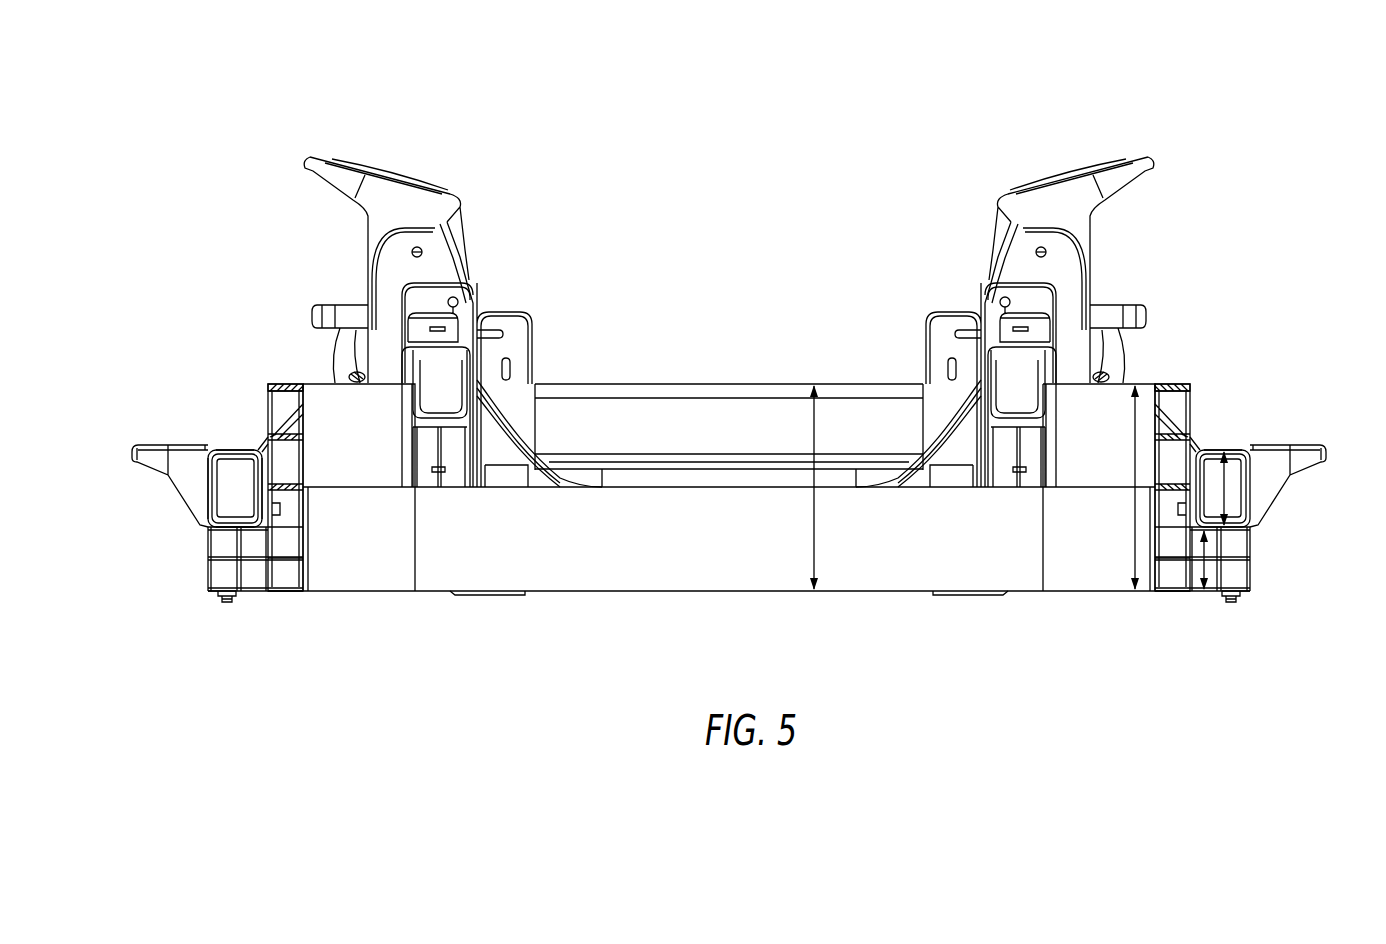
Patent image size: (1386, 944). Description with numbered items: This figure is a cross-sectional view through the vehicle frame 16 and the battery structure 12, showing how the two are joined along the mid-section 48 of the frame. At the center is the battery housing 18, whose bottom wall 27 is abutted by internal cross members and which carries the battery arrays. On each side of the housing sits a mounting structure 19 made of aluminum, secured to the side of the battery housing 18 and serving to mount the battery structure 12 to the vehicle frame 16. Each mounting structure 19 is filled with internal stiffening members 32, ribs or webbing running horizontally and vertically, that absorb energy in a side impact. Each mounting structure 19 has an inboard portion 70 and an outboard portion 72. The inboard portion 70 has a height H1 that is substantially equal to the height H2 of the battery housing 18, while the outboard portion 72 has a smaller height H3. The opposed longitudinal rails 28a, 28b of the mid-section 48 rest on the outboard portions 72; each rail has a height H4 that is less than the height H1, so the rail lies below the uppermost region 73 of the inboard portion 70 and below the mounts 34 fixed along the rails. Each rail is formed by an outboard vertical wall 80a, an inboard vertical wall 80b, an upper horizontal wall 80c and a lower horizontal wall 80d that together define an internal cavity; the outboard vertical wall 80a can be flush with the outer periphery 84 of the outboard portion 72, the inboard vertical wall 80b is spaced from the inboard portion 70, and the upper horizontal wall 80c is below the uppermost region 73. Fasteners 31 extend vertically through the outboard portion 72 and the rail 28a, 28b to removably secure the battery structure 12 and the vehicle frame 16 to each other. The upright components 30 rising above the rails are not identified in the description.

The battery structure 12 is at (682, 600).
The vehicle frame 16 is at (740, 298).
The battery housing 18 is at (1112, 580).
The mounting structure 19 is at (242, 618).
The bottom wall 27 is at (900, 598).
The longitudinal rail 28a is at (1226, 445).
The longitudinal rail 28b is at (225, 513).
The handle arm 30 is at (440, 177).
The fasteners 31 is at (227, 604).
The internal stiffening members 32 is at (232, 560).
The mounts 34 is at (158, 458).
The mid-section 48 is at (1248, 447).
The inboard portion 70 is at (282, 393).
The outboard portion 72 is at (207, 597).
The uppermost region 73 is at (297, 372).
The outboard vertical wall 80a is at (210, 478).
The inboard vertical wall 80b is at (258, 480).
The upper horizontal wall 80c is at (238, 455).
The lower horizontal wall 80d is at (255, 528).
The outer periphery 84 is at (203, 560).
The height of inboard portion H1 is at (1133, 468).
The height of battery housing H2 is at (817, 440).
The height of outboard portion H3 is at (1213, 547).
The height of rail H4 is at (1228, 480).